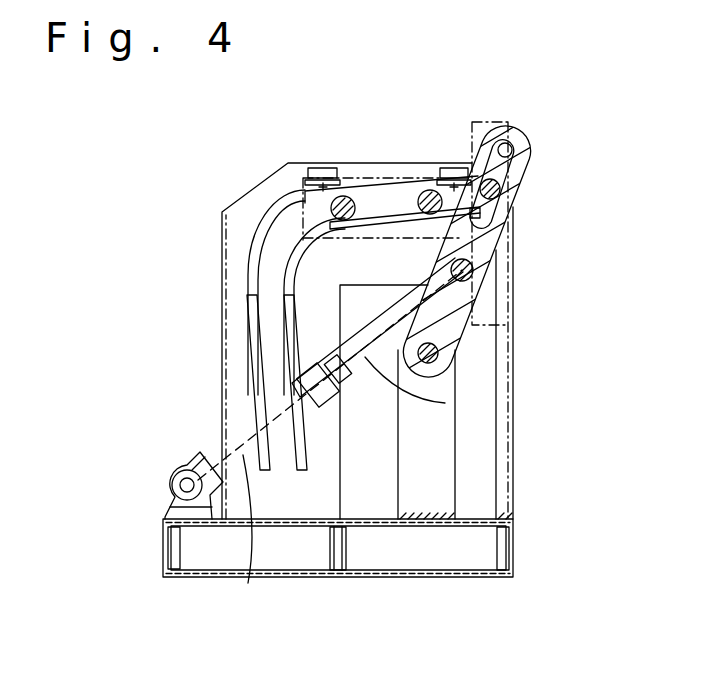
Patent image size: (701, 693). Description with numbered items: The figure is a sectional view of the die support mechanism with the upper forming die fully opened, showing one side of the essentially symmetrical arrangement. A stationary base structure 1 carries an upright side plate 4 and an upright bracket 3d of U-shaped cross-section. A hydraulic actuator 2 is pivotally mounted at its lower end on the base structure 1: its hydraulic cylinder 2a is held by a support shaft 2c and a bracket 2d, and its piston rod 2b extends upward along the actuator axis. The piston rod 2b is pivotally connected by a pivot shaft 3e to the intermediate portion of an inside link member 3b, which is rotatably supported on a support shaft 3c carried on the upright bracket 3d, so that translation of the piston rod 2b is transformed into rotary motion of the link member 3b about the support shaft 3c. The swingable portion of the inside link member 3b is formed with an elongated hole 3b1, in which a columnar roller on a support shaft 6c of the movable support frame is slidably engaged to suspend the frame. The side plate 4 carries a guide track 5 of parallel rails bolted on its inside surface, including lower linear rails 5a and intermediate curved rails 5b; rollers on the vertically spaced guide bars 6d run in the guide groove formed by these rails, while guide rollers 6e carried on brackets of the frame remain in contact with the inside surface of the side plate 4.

The stationary base structure 1 is at (394, 560).
The hydraulic actuator 2 is at (213, 440).
The hydraulic cylinder 2a is at (251, 536).
The piston rod 2b is at (445, 403).
The support shaft 2c is at (180, 470).
The bracket 2d is at (173, 505).
The inside link member 3b is at (510, 132).
The elongated hole 3b1 is at (505, 143).
The support shaft 3c is at (440, 352).
The upright bracket 3d is at (440, 452).
The pivot shaft 3e is at (473, 272).
The upright side plate 4 is at (253, 207).
The guide track 5 is at (245, 323).
The lower linear rail 5a is at (293, 350).
The intermediate curved rail 5b is at (263, 240).
The support shaft 6c is at (500, 190).
The guide bar 6d is at (347, 196).
The guide roller 6e is at (318, 168).